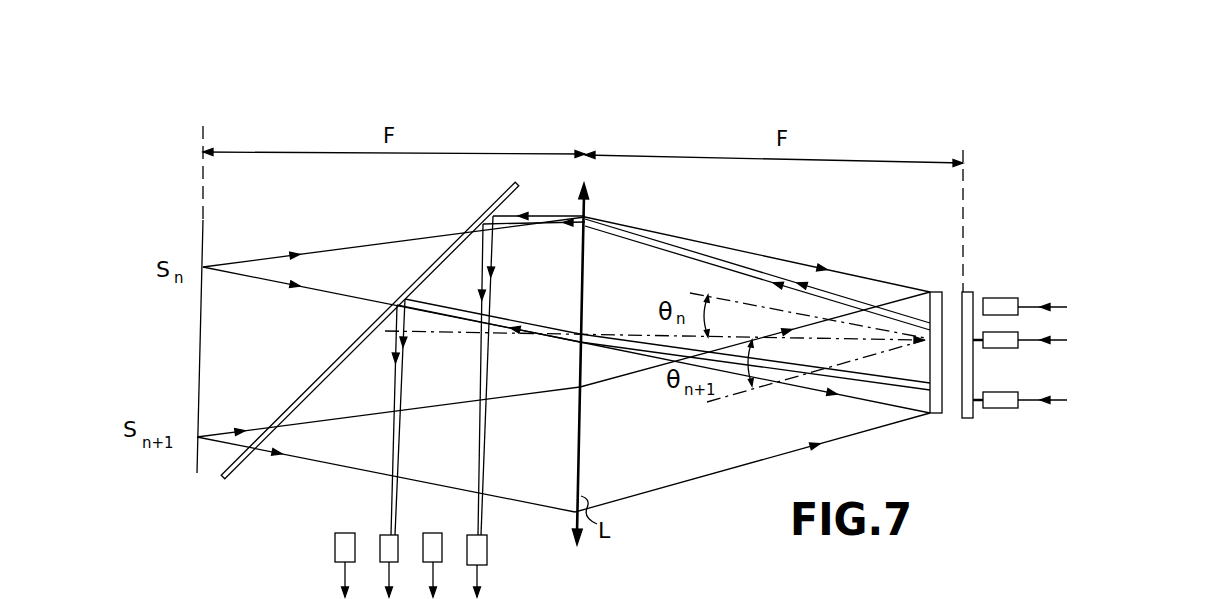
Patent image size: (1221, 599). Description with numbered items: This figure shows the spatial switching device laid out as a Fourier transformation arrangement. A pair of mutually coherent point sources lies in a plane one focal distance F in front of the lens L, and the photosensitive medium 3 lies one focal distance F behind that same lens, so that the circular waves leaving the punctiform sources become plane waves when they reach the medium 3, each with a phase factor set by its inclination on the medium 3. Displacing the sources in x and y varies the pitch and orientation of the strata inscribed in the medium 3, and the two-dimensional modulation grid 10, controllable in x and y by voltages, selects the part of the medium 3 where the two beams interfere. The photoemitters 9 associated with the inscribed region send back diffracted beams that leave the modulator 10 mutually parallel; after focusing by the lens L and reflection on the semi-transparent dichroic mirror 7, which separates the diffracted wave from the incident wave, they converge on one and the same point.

The photosensitive medium 3 is at (966, 418).
The dichroic mirror 7 is at (228, 480).
The photo emitters 9 is at (1020, 427).
The two-dimensional modulation grid 10 is at (325, 525).